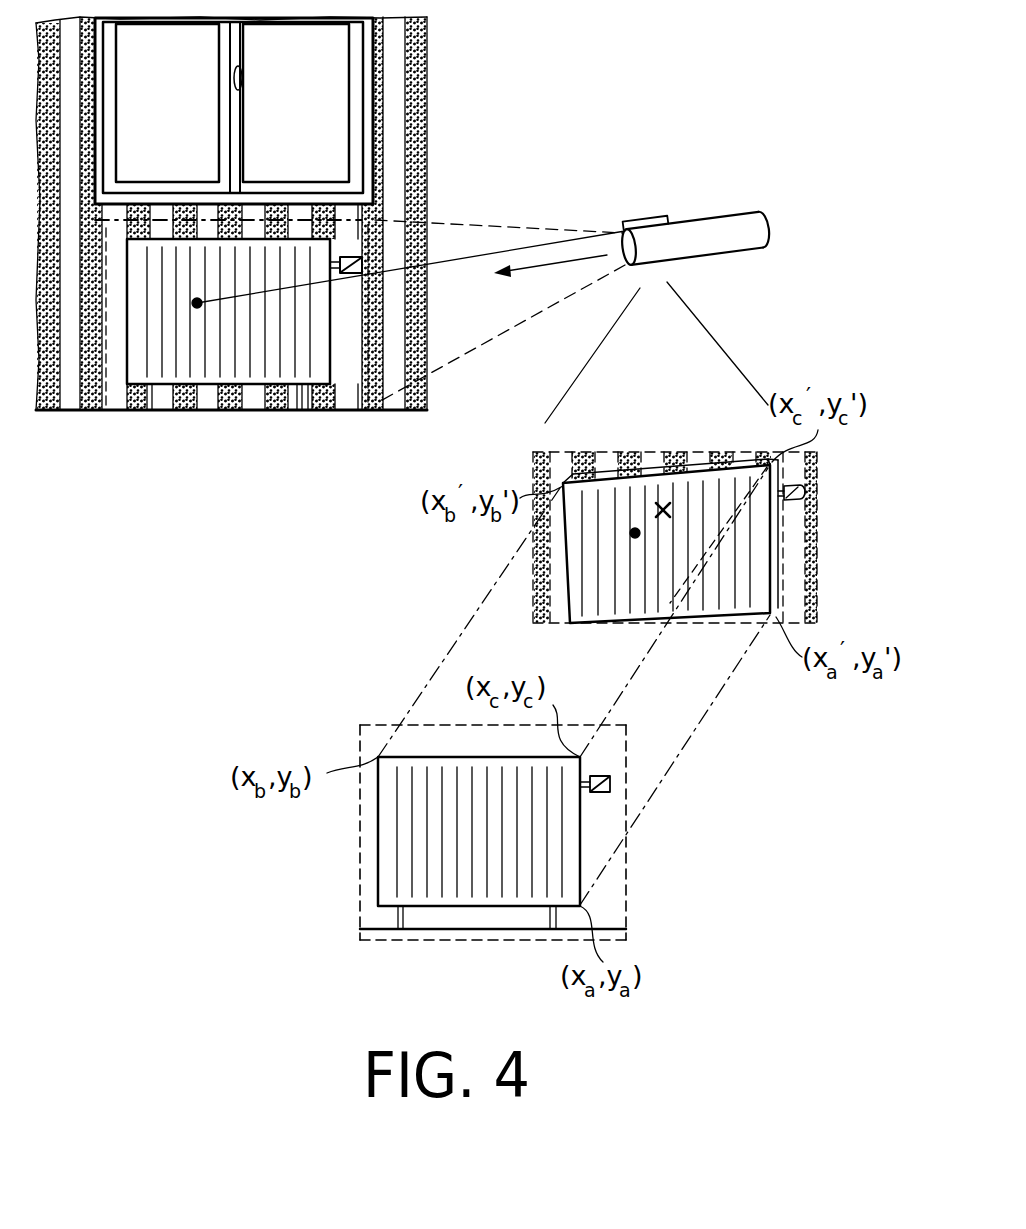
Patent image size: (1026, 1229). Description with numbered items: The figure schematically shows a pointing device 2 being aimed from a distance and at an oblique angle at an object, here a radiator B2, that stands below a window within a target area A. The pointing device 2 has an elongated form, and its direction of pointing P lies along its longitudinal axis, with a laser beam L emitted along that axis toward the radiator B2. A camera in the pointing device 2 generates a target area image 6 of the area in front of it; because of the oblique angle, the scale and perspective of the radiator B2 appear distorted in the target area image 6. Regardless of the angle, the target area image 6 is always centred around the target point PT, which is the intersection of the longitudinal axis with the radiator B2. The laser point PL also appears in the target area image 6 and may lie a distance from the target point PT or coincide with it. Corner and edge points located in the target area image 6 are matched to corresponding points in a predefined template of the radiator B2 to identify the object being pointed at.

The pointing device 2 is at (696, 229).
The target area image 6 is at (652, 452).
The target area A is at (107, 412).
The radiator B2 is at (165, 378).
The laser beam L is at (466, 255).
The direction of pointing P is at (548, 268).
The laser point PL is at (201, 308).
The target point PT is at (663, 515).